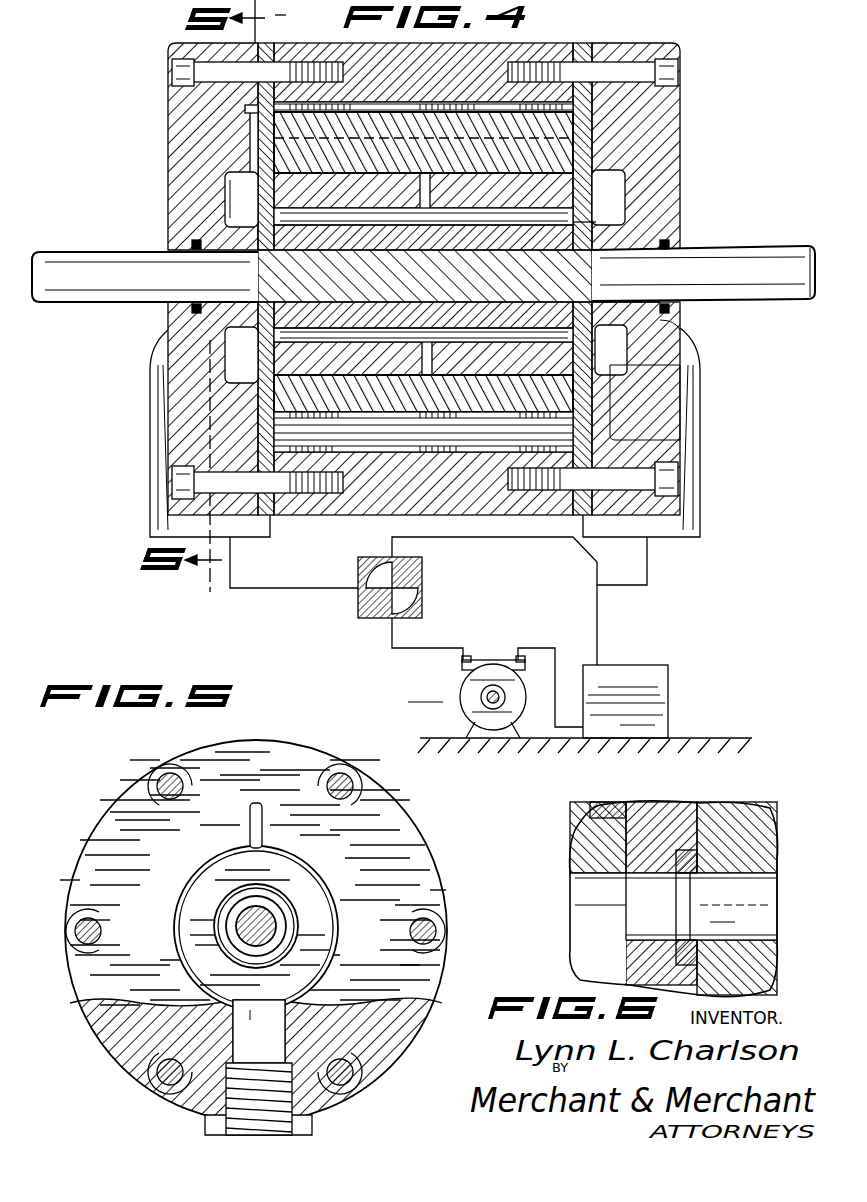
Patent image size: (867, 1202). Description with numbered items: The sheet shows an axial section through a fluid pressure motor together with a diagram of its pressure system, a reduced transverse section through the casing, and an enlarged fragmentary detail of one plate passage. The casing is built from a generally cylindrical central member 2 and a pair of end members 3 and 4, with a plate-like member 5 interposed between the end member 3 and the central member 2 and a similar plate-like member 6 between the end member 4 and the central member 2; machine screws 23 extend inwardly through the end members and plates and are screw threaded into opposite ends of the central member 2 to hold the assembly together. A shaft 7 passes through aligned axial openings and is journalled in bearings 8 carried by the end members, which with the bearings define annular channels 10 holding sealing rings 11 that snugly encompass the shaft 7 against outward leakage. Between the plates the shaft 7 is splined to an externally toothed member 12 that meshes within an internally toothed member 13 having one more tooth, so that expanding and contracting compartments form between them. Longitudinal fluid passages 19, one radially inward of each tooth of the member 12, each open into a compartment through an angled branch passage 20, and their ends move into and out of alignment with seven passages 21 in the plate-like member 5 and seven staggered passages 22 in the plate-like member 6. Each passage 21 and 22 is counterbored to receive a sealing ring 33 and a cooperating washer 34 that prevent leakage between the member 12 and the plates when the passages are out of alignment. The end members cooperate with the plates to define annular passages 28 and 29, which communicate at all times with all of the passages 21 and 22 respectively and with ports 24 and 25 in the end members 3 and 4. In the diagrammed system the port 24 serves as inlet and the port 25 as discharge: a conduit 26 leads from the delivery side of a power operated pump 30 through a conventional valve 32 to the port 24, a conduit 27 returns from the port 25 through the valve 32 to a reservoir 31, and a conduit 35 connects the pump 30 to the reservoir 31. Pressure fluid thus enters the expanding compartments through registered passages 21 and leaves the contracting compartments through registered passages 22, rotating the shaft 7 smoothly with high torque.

In FIG. 4, the central casing member 2 is at (500, 50).
In FIG. 4, the end member 3 is at (666, 112).
In FIG. 4, the end member 4 is at (182, 128).
In FIG. 5, the end member 4 is at (258, 752).
In FIG. 6, the end member 4 is at (592, 852).
In FIG. 4, the plate-like member 5 is at (584, 48).
In FIG. 4, the plate-like member 6 is at (262, 48).
In FIG. 6, the plate-like member 6 is at (660, 815).
In FIG. 4, the shaft 7 is at (733, 270).
In FIG. 5, the shaft 7 is at (278, 930).
In FIG. 4, the bearings 8 is at (193, 240).
In FIG. 5, the bearings 8 is at (292, 912).
In FIG. 6, the bearings 8 is at (598, 810).
In FIG. 4, the annular channels 10 is at (675, 330).
In FIG. 4, the sealing rings 11 is at (662, 306).
In FIG. 4, the externally toothed member 12 is at (524, 366).
In FIG. 6, the externally toothed member 12 is at (748, 835).
In FIG. 4, the internally toothed member 13 is at (255, 122).
In FIG. 4, the fluid passages 19 is at (508, 220).
In FIG. 6, the fluid passages 19 is at (760, 908).
In FIG. 4, the branch passages 20 is at (420, 191).
In FIG. 4, the passages 21 is at (595, 217).
In FIG. 4, the passages 22 is at (241, 355).
In FIG. 6, the passages 22 is at (625, 878).
In FIG. 4, the machine screws 23 is at (618, 70).
In FIG. 5, the machine screws 23 is at (345, 785).
In FIG. 4, the port 24 is at (622, 345).
In FIG. 4, the port 25 is at (215, 385).
In FIG. 5, the port 25 is at (270, 1053).
In FIG. 4, the fluid conduit 26 is at (649, 572).
In FIG. 4, the fluid conduit 27 is at (232, 567).
In FIG. 4, the annular passage 28 is at (627, 185).
In FIG. 4, the annular passage 29 is at (232, 190).
In FIG. 5, the annular passage 29 is at (218, 901).
In FIG. 6, the annular passage 29 is at (588, 940).
In FIG. 4, the pump 30 is at (493, 672).
In FIG. 4, the reservoir 31 is at (655, 725).
In FIG. 4, the valve 32 is at (358, 608).
In FIG. 4, the sealing rings 33 is at (258, 358).
In FIG. 6, the sealing rings 33 is at (680, 870).
In FIG. 6, the washers 34 is at (681, 946).
In FIG. 4, the conduit 35 is at (556, 656).